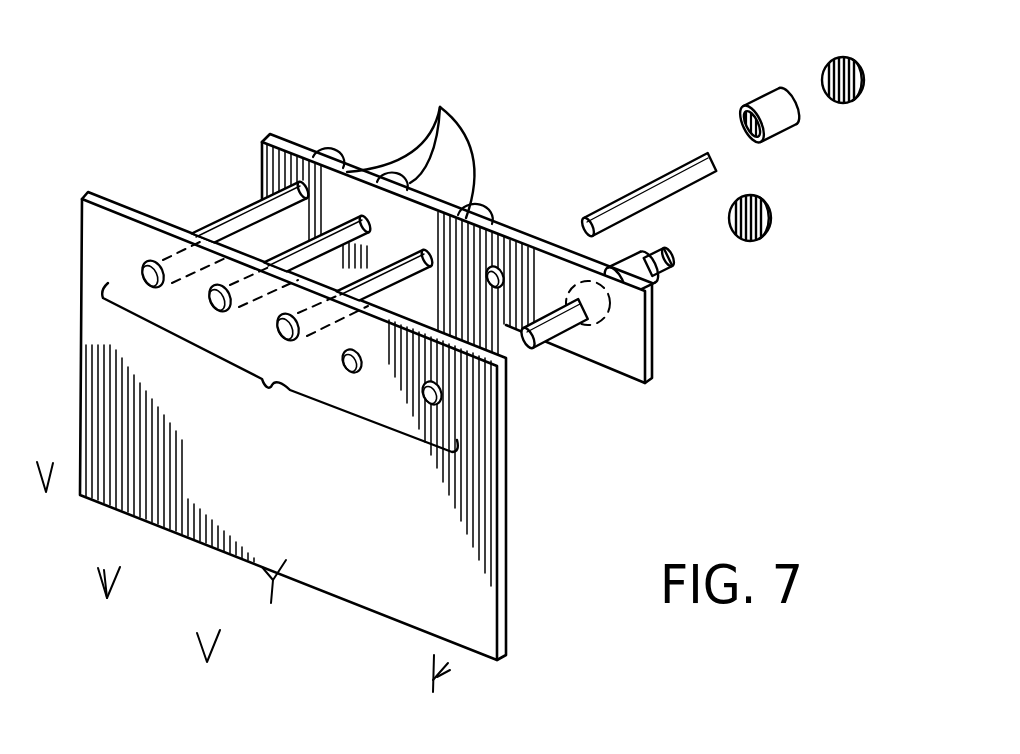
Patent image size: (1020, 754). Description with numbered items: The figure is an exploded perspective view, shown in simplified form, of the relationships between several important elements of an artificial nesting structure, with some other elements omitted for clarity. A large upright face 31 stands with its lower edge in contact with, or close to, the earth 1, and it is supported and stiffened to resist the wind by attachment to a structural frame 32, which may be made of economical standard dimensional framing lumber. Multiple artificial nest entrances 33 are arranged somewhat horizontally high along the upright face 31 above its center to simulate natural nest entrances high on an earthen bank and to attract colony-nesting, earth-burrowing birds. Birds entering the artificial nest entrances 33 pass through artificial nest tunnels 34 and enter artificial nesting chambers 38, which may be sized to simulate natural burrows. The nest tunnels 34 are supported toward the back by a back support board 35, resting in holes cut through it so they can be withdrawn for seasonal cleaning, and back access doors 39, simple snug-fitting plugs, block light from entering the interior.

The earth 1 is at (348, 678).
The upright face 31 is at (312, 520).
The structural frame 32 is at (410, 146).
The artificial nest entrances 33 is at (280, 367).
The artificial nest tunnels 34 is at (655, 178).
The back support board 35 is at (642, 380).
The artificial nesting chambers 38 is at (748, 103).
The back access doors 39 is at (837, 57).